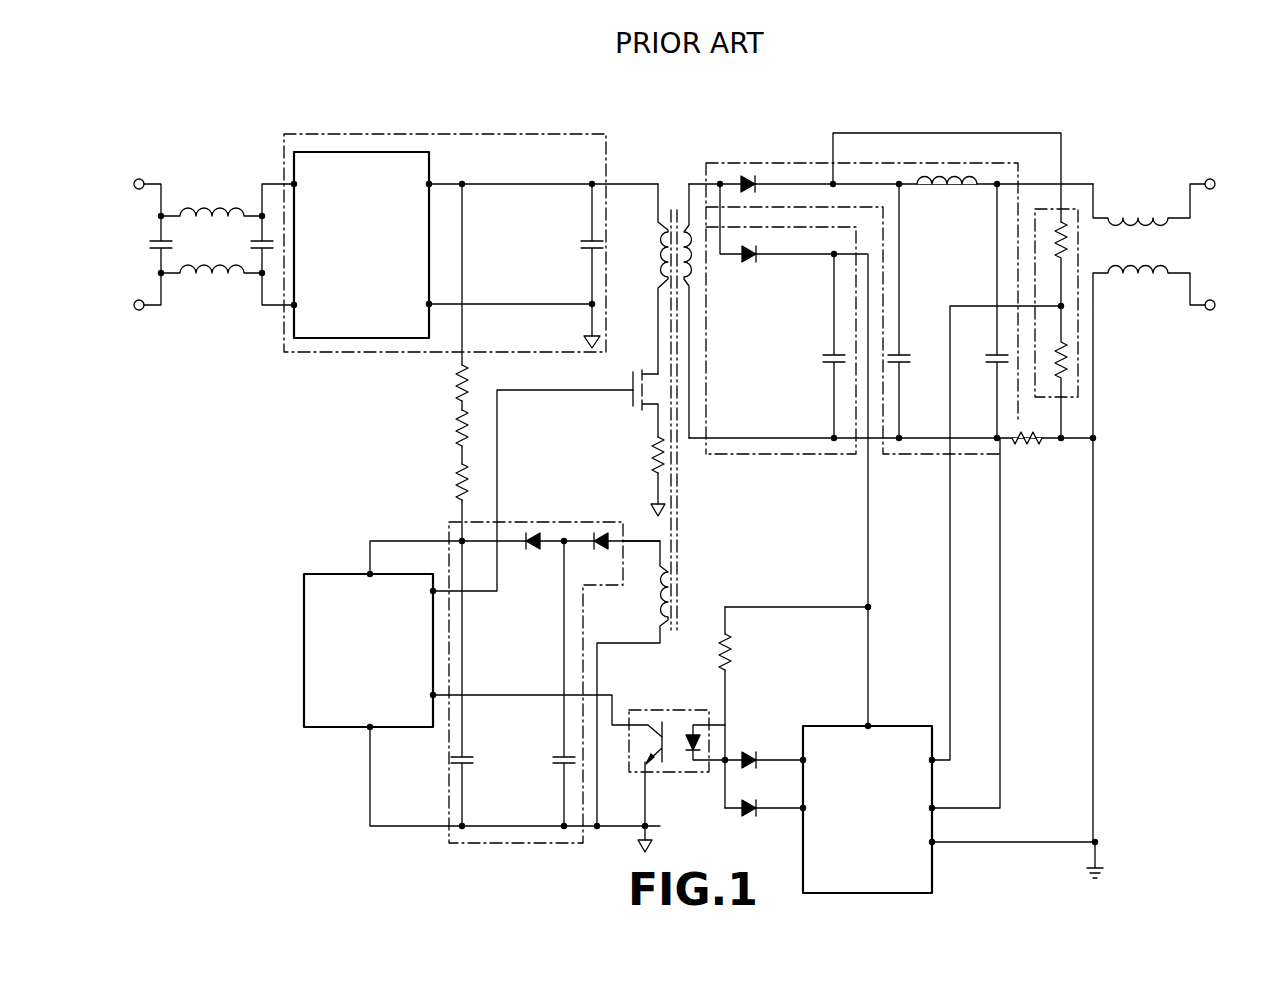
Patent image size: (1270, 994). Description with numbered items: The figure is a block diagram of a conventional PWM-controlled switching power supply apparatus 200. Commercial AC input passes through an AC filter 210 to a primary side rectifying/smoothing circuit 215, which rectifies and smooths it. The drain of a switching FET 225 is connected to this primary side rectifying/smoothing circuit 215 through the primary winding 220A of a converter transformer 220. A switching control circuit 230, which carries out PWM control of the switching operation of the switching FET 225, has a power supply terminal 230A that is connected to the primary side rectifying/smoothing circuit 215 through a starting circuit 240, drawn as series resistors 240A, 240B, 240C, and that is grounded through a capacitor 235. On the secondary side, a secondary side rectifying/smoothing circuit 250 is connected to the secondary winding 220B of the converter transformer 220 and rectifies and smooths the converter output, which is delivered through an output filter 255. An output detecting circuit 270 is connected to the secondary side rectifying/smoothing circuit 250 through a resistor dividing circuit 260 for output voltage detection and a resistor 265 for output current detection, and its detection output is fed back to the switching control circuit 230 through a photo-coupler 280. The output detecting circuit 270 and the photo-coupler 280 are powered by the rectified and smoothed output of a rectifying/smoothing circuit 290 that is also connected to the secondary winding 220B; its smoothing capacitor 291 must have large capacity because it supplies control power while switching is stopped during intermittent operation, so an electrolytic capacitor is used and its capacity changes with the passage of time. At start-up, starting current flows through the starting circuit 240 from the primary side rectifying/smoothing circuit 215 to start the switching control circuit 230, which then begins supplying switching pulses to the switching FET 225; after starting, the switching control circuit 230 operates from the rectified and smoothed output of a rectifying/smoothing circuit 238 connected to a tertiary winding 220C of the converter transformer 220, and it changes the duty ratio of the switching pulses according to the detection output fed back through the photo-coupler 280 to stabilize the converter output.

The switching power supply apparatus 200 is at (318, 818).
The AC filter 210 is at (208, 278).
The primary side rectifying/smoothing circuit 215 is at (284, 160).
The converter transformer 220 is at (674, 210).
The primary winding 220A is at (656, 230).
The secondary winding 220B is at (691, 222).
The tertiary winding 220C is at (672, 590).
The switching FET 225 is at (628, 400).
The switching control circuit 230 is at (304, 645).
The power supply terminal 230A is at (368, 573).
The capacitor 235 is at (483, 760).
The rectifying/smoothing circuit 238 is at (500, 843).
The starting circuit 240 is at (360, 378).
The resistor 240A is at (458, 387).
The resistor 240B is at (458, 428).
The resistor 240C is at (458, 476).
The secondary side rectifying/smoothing circuit 250 is at (925, 455).
The output filter 255 is at (1148, 214).
The resistor dividing circuit 260 is at (1080, 388).
The resistor 265 is at (1040, 450).
The output detecting circuit 270 is at (935, 878).
The photo-coupler 280 is at (681, 720).
The rectifying/smoothing circuit 290 is at (788, 455).
The smoothing capacitor 291 is at (828, 360).